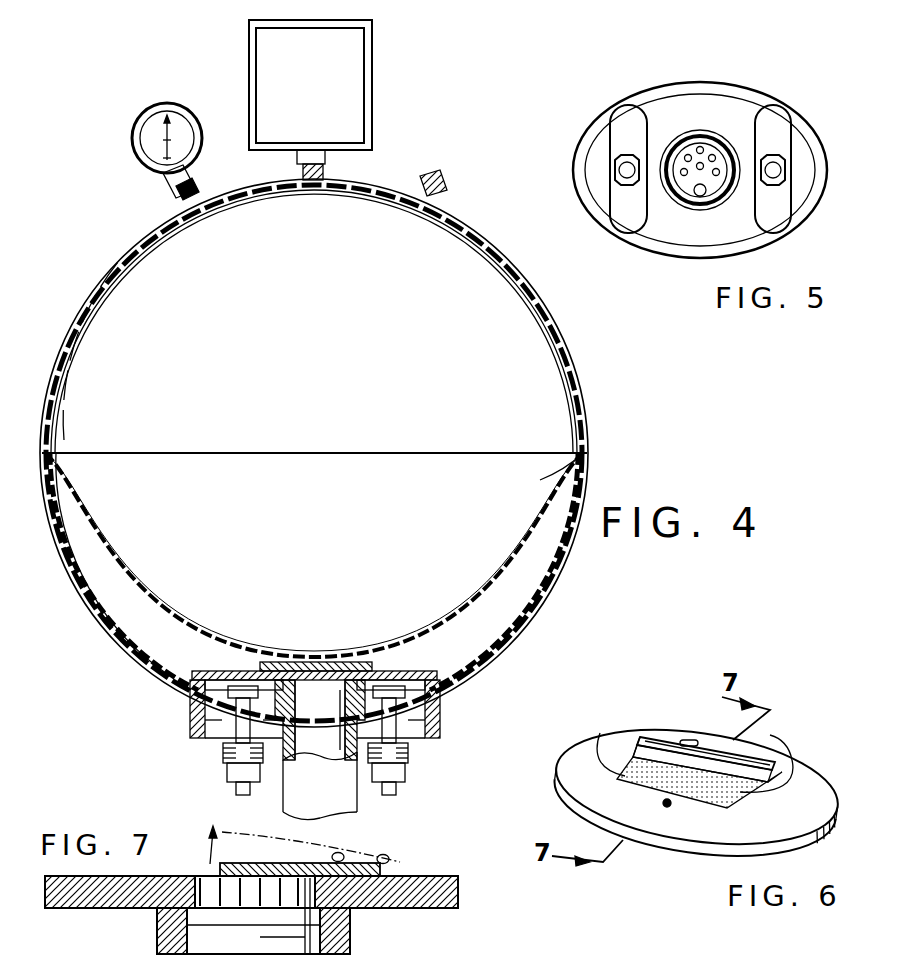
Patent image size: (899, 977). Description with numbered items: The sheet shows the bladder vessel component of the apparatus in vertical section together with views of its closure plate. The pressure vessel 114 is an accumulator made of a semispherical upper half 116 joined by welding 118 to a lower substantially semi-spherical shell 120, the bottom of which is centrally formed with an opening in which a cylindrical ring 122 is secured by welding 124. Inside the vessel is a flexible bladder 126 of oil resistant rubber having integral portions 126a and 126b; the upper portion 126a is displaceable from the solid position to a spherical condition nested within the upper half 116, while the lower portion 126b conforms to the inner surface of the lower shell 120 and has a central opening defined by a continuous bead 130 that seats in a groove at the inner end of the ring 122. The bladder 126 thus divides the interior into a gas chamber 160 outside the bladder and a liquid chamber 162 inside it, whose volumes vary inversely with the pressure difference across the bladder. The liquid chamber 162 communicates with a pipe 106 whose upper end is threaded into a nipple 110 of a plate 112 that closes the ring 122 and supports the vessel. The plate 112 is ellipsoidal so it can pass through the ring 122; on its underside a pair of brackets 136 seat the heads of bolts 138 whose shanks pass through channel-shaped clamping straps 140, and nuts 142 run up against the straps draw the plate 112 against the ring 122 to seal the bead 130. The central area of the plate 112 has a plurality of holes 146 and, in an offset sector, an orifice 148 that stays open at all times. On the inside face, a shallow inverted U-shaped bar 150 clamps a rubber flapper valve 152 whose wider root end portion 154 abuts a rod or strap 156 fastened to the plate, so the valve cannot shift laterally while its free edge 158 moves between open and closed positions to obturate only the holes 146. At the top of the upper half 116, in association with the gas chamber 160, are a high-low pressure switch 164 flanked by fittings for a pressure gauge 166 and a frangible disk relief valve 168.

In FIG. 4, the pipe 106 is at (283, 802).
In FIG. 4, the nipple 110 is at (350, 760).
In FIG. 5, the nipple 110 is at (668, 145).
In FIG. 4, the plate 112 is at (417, 669).
In FIG. 5, the plate 112 is at (822, 156).
In FIG. 7, the plate 112 is at (458, 898).
In FIG. 4, the pressure vessel 114 is at (573, 363).
In FIG. 4, the semispherical upper half 116 is at (586, 420).
In FIG. 4, the welding 118 is at (586, 453).
In FIG. 4, the lower shell 120 is at (548, 600).
In FIG. 4, the cylindrical ring 122 is at (196, 739).
In FIG. 4, the welding 124 is at (186, 700).
In FIG. 4, the flexible bladder 126 is at (105, 549).
In FIG. 4, the bladder upper portion 126a is at (530, 537).
In FIG. 4, the bladder lower portion 126b is at (106, 614).
In FIG. 4, the bead 130 is at (445, 708).
In FIG. 4, the brackets 136 is at (442, 732).
In FIG. 4, the bolts 138 is at (196, 722).
In FIG. 5, the clamping straps 140 is at (752, 112).
In FIG. 4, the nuts 142 is at (409, 776).
In FIG. 5, the nuts 142 is at (620, 158).
In FIG. 5, the holes 146 is at (712, 154).
In FIG. 7, the holes 146 is at (246, 905).
In FIG. 5, the orifice 148 is at (700, 193).
In FIG. 6, the orifice 148 is at (662, 804).
In FIG. 7, the orifice 148 is at (203, 876).
In FIG. 6, the bar 150 is at (781, 786).
In FIG. 7, the bar 150 is at (344, 857).
In FIG. 6, the flapper valve 152 is at (632, 762).
In FIG. 6, the root end portion 154 is at (786, 776).
In FIG. 6, the rod or strap 156 is at (690, 740).
In FIG. 7, the rod or strap 156 is at (389, 861).
In FIG. 6, the free edge 158 is at (697, 815).
In FIG. 4, the gas chamber 160 is at (314, 473).
In FIG. 4, the liquid chamber 162 is at (201, 657).
In FIG. 4, the high-low pressure switch 164 is at (310, 100).
In FIG. 4, the pressure gauge 166 is at (132, 140).
In FIG. 4, the relief valve 168 is at (432, 182).